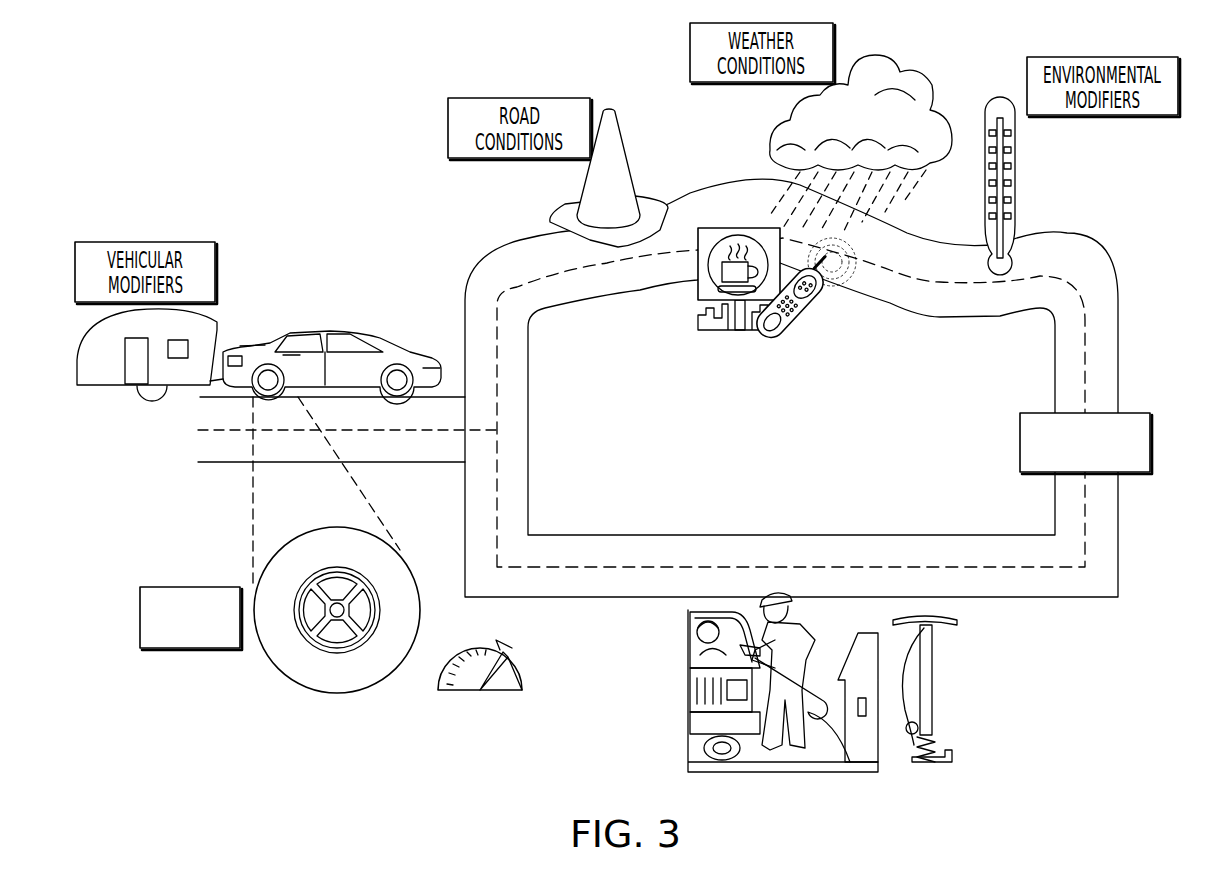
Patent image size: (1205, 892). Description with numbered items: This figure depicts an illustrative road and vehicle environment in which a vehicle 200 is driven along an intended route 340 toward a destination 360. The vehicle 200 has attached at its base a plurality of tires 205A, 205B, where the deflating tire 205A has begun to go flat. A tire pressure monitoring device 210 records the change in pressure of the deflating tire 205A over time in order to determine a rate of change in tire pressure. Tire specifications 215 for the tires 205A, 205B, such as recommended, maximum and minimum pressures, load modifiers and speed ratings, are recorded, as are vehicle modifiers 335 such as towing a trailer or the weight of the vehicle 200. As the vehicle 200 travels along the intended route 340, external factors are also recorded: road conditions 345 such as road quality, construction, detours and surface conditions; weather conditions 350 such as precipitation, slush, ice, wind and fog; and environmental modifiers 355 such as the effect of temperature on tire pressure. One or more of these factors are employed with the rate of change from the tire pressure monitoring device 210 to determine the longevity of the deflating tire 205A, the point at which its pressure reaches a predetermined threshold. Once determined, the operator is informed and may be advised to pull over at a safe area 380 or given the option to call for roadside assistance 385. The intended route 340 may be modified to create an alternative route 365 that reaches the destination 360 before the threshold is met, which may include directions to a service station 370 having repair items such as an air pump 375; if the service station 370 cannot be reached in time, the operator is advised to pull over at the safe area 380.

The vehicle 200 is at (332, 320).
The deflating tire 205A is at (308, 647).
The tire 205B is at (347, 492).
The tire pressure monitoring device 210 is at (538, 657).
The tire specifications 215 is at (191, 567).
The vehicle modifiers 335 is at (187, 320).
The intended route 340 is at (791, 388).
The road conditions 345 is at (609, 127).
The weather conditions 350 is at (888, 116).
The environmental modifiers 355 is at (1062, 186).
The destination 360 is at (1022, 432).
The alternative route 365 is at (791, 399).
The service station 370 is at (799, 726).
The air pump 375 is at (972, 689).
The safe area 380 is at (765, 330).
The roadside assistance 385 is at (836, 301).